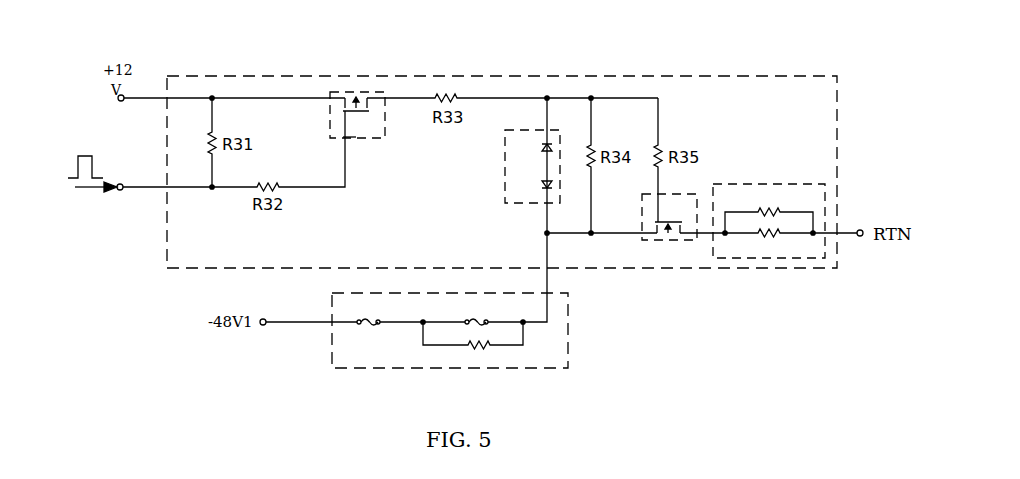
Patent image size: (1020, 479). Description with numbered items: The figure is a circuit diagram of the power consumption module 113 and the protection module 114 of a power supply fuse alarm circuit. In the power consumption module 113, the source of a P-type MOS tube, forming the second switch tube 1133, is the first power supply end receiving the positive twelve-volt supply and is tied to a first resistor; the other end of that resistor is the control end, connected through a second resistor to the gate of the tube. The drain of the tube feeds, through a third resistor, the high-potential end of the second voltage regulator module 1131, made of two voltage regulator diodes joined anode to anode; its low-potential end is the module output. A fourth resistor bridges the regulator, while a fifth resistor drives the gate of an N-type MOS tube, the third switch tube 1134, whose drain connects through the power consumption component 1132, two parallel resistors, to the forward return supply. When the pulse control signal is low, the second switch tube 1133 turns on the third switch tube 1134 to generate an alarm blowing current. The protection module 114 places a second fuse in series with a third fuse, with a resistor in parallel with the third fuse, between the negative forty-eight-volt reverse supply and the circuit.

The power consumption module 113 is at (493, 76).
The second voltage regulator module 1131 is at (507, 173).
The power consumption component 1132 is at (740, 184).
The second switch tube 1133 is at (355, 139).
The third switch tube 1134 is at (675, 195).
The protection module 114 is at (568, 342).